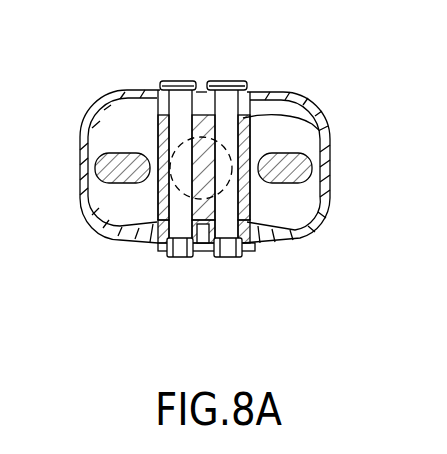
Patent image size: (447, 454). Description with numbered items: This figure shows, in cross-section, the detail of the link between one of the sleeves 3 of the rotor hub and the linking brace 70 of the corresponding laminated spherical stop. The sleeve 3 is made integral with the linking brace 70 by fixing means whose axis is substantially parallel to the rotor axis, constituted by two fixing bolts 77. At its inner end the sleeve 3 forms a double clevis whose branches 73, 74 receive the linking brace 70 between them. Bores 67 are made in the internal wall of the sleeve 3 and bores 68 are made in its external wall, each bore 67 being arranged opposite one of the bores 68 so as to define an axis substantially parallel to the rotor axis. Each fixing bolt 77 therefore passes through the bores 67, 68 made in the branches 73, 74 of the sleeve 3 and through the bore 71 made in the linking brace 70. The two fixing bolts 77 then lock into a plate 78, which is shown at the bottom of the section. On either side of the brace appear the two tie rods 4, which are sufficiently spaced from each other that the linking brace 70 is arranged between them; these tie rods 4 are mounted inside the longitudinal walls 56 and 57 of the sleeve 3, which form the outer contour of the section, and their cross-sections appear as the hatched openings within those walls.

The sleeve 3 is at (107, 236).
The tie rod 4 is at (110, 172).
The longitudinal wall 56 is at (79, 186).
The longitudinal wall 57 is at (326, 192).
The bore 67 is at (154, 243).
The bore 68 is at (200, 91).
The linking brace 70 is at (320, 127).
The bore 71 is at (156, 137).
The branch of double clevis 73 is at (246, 238).
The branch of double clevis 74 is at (257, 100).
The fixing bolt 77 is at (172, 105).
The plate 78 is at (206, 251).